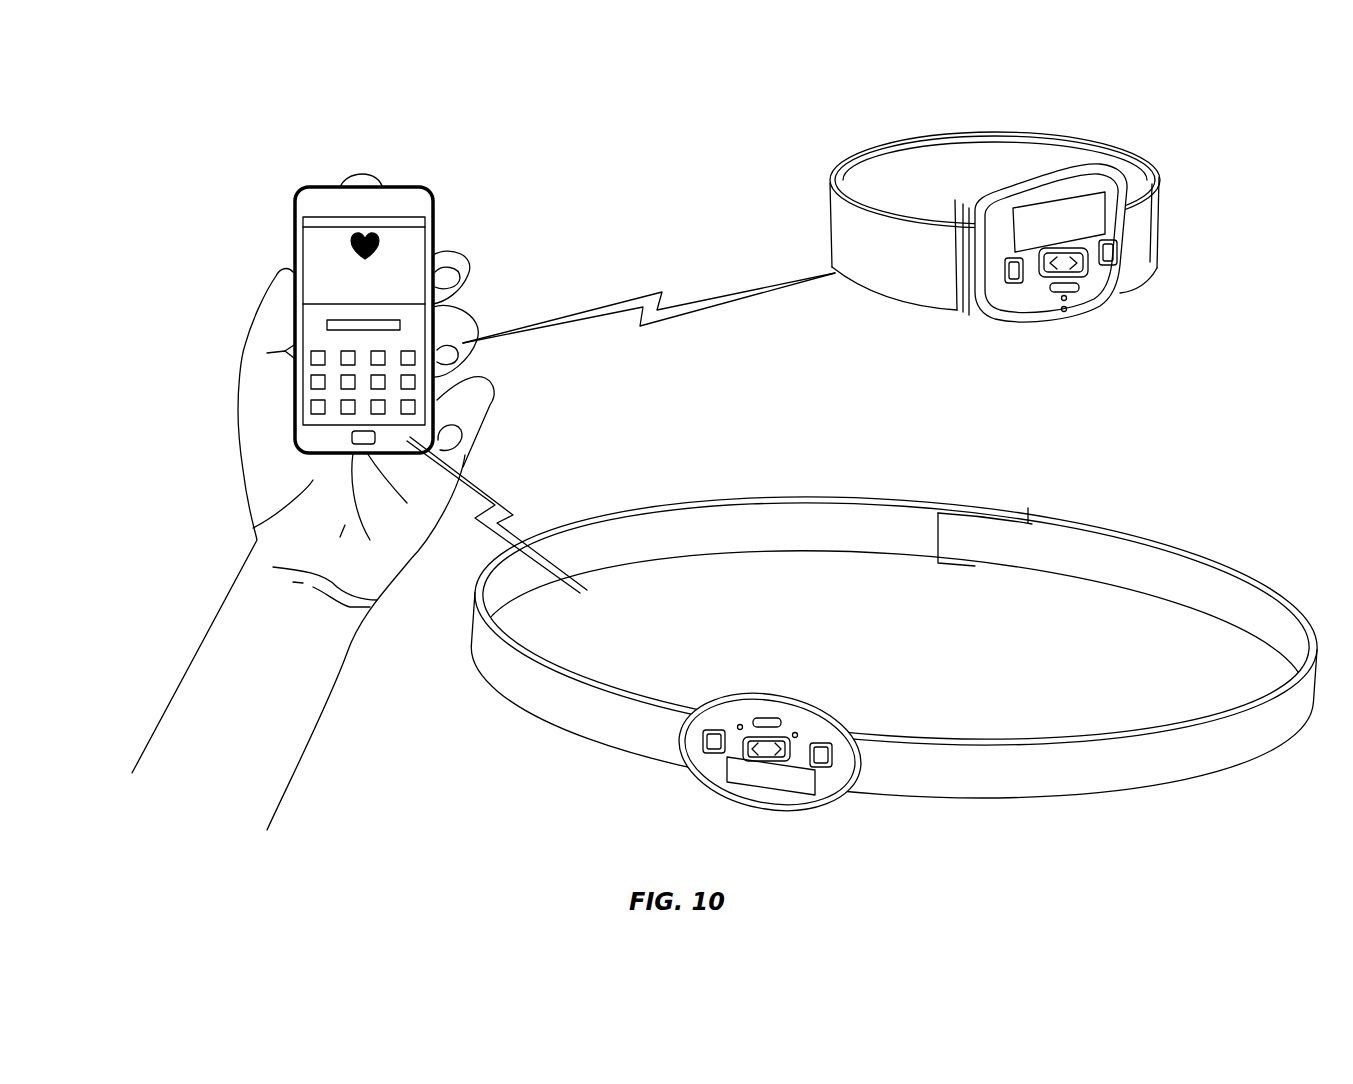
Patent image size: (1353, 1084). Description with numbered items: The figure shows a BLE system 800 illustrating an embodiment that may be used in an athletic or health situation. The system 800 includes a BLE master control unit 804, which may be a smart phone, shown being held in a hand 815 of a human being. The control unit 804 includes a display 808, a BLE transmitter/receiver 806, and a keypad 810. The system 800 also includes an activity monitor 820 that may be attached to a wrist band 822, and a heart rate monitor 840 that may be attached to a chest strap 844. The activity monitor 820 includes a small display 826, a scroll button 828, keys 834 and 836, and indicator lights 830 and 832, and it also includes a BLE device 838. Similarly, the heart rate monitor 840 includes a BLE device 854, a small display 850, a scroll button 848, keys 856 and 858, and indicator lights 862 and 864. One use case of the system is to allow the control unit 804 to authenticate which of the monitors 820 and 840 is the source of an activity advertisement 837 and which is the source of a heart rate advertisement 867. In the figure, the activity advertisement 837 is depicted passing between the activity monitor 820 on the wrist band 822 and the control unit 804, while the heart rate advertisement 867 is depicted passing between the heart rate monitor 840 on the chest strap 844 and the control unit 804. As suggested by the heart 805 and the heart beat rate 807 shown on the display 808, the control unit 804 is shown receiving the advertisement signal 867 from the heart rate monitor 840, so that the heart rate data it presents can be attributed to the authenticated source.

The BLE system 800 is at (162, 202).
The BLE master control unit 804 is at (295, 205).
The heart 805 is at (372, 243).
The BLE transmitter/receiver 806 is at (400, 325).
The heart beat rate 807 is at (345, 281).
The display 808 is at (408, 246).
The keypad 810 is at (312, 378).
The hand 815 is at (253, 528).
The activity advertisement 837 is at (636, 292).
The heart rate advertisement 867 is at (510, 508).
The wrist band 822 is at (913, 153).
The activity monitor 820 is at (1107, 283).
The small display 826 is at (1095, 213).
The scroll button 828 is at (1043, 280).
The indicator light 830 is at (1065, 313).
The indicator light 832 is at (1067, 302).
The key 834 is at (1005, 280).
The key 836 is at (1118, 254).
The BLE device 838 is at (1080, 288).
The heart rate monitor 840 is at (707, 768).
The chest strap 844 is at (1240, 752).
The scroll button 848 is at (766, 761).
The small display 850 is at (794, 777).
The BLE device 854 is at (765, 716).
The key 856 is at (826, 747).
The key 858 is at (704, 742).
The indicator light 862 is at (796, 732).
The indicator light 864 is at (738, 725).